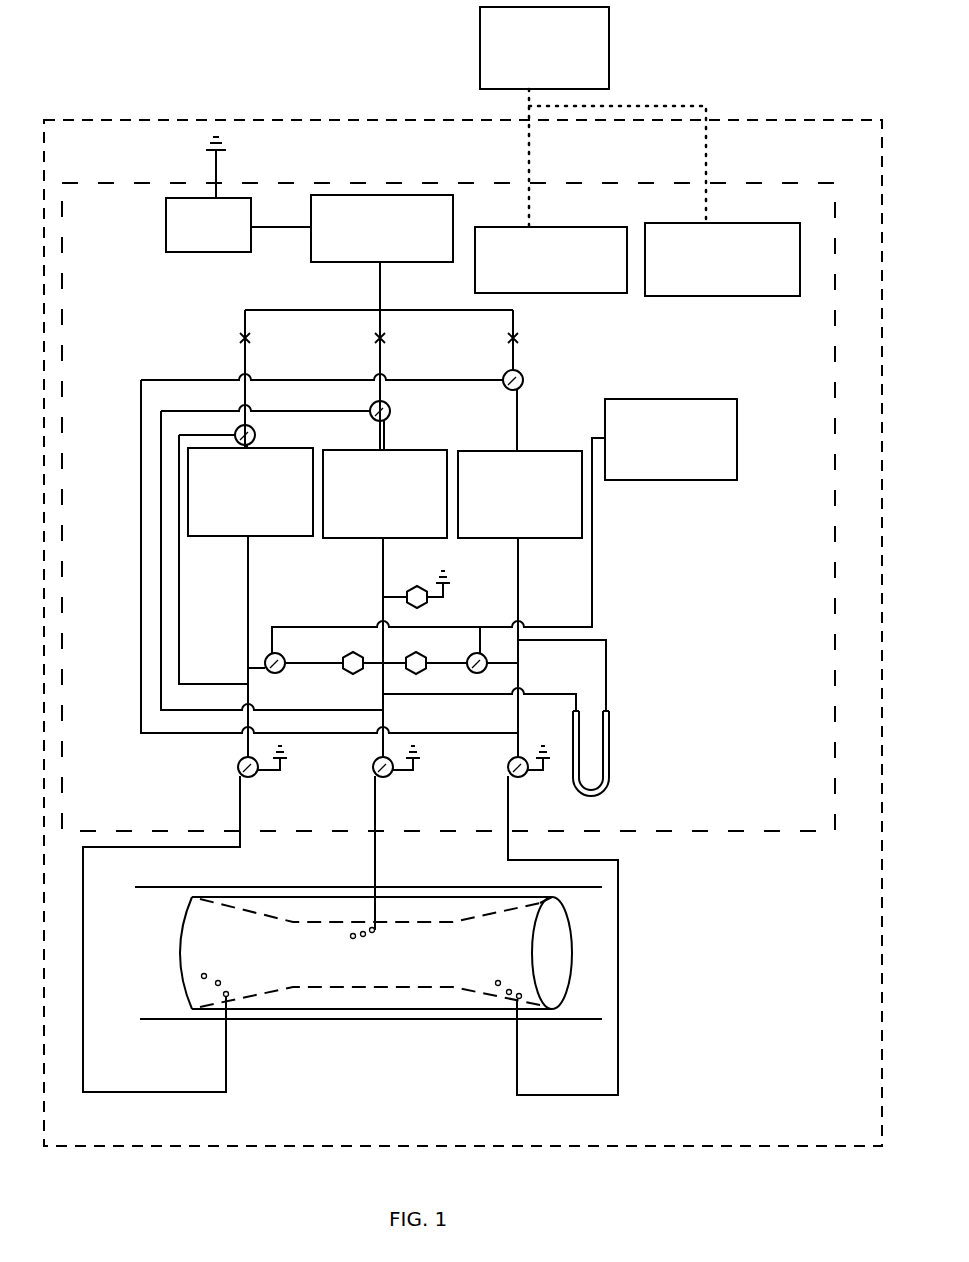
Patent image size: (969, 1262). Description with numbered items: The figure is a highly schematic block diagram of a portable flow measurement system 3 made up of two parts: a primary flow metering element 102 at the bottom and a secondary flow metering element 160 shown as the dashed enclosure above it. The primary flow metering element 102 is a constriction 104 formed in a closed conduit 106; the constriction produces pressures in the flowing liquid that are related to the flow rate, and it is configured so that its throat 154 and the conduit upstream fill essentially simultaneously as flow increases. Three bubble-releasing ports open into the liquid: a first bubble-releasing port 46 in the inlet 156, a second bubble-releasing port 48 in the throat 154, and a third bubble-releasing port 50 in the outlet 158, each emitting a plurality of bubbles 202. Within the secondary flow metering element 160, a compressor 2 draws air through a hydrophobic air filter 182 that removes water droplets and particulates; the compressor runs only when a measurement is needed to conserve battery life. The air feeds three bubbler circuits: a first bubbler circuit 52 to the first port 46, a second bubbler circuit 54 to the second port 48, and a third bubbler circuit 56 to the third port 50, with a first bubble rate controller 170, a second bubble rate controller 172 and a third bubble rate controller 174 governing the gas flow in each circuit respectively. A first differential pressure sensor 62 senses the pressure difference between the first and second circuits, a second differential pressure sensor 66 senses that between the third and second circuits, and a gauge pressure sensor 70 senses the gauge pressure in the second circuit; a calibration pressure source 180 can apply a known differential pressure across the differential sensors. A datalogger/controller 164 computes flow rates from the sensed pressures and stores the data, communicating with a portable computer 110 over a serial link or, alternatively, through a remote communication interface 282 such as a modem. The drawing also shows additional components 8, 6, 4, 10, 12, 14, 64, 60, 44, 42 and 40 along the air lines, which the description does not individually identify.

The portable flow measurement system 3 is at (84, 110).
The secondary flow metering element 160 is at (93, 178).
The computer 110 is at (544, 48).
The datalogger/controller 164 is at (551, 260).
The remote communication interface 282 is at (722, 259).
The air filter 182 is at (208, 194).
The compressor 2 is at (382, 228).
The first shutoff valve 8 is at (255, 341).
The second shutoff valve 6 is at (390, 341).
The third shutoff valve 4 is at (522, 338).
The first solenoid valve 10 is at (526, 384).
The second solenoid valve 12 is at (392, 413).
The third solenoid valve 14 is at (258, 434).
The third bubble rate controller 174 is at (250, 492).
The second bubble rate controller 172 is at (385, 494).
The first bubble rate controller 170 is at (520, 494).
The calibration pressure source 180 is at (671, 439).
The gauge pressure sensor 70 is at (414, 587).
The second differential pressure sensor 66 is at (342, 659).
The first differential pressure sensor 62 is at (410, 676).
The first bypass valve 64 is at (283, 673).
The second bypass valve 60 is at (470, 655).
The first outlet valve 44 is at (238, 764).
The second outlet valve 42 is at (371, 761).
The third outlet valve 40 is at (508, 767).
The third bubbler circuit 56 is at (239, 816).
The second bubbler circuit 54 is at (373, 822).
The first bubbler circuit 52 is at (506, 818).
The primary flow metering element 102 is at (487, 895).
The closed conduit 106 is at (437, 1023).
The outlet 158 is at (176, 924).
The inlet 156 is at (574, 938).
The constriction 104 is at (566, 914).
The throat 154 is at (398, 987).
The second bubble-releasing port 48 is at (375, 933).
The third bubble-releasing port 50 is at (226, 990).
The first bubble-releasing port 46 is at (545, 985).
The bubbles 202 is at (202, 975).